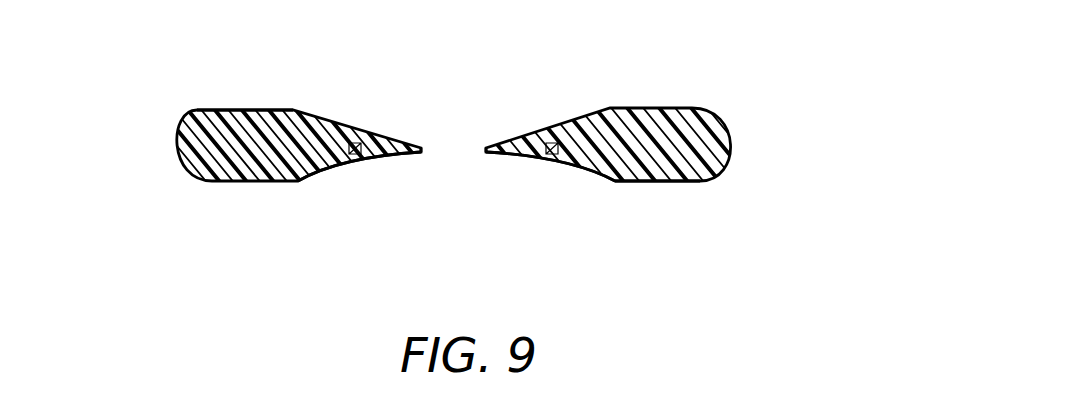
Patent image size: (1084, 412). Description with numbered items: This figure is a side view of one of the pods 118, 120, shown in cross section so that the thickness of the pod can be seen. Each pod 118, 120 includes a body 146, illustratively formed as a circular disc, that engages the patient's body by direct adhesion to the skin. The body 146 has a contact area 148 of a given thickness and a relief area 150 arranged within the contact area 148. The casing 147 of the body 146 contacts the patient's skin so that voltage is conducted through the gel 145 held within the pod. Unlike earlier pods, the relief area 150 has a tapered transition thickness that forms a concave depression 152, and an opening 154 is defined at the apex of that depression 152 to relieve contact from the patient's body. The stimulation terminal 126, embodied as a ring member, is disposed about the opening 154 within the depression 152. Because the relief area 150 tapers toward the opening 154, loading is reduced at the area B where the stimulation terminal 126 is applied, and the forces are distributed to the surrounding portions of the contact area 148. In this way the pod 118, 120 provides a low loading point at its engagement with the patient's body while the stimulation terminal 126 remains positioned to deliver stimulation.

The pod 118 is at (632, 160).
The pod 120 is at (632, 160).
The stimulation terminal 126 is at (350, 158).
The gel 145 is at (262, 148).
The body 146 is at (276, 144).
The casing 147 is at (228, 109).
The contact area 148 is at (655, 183).
The relief area 150 is at (385, 180).
The depression 152 is at (511, 141).
The opening 154 is at (456, 153).
The area B is at (487, 172).